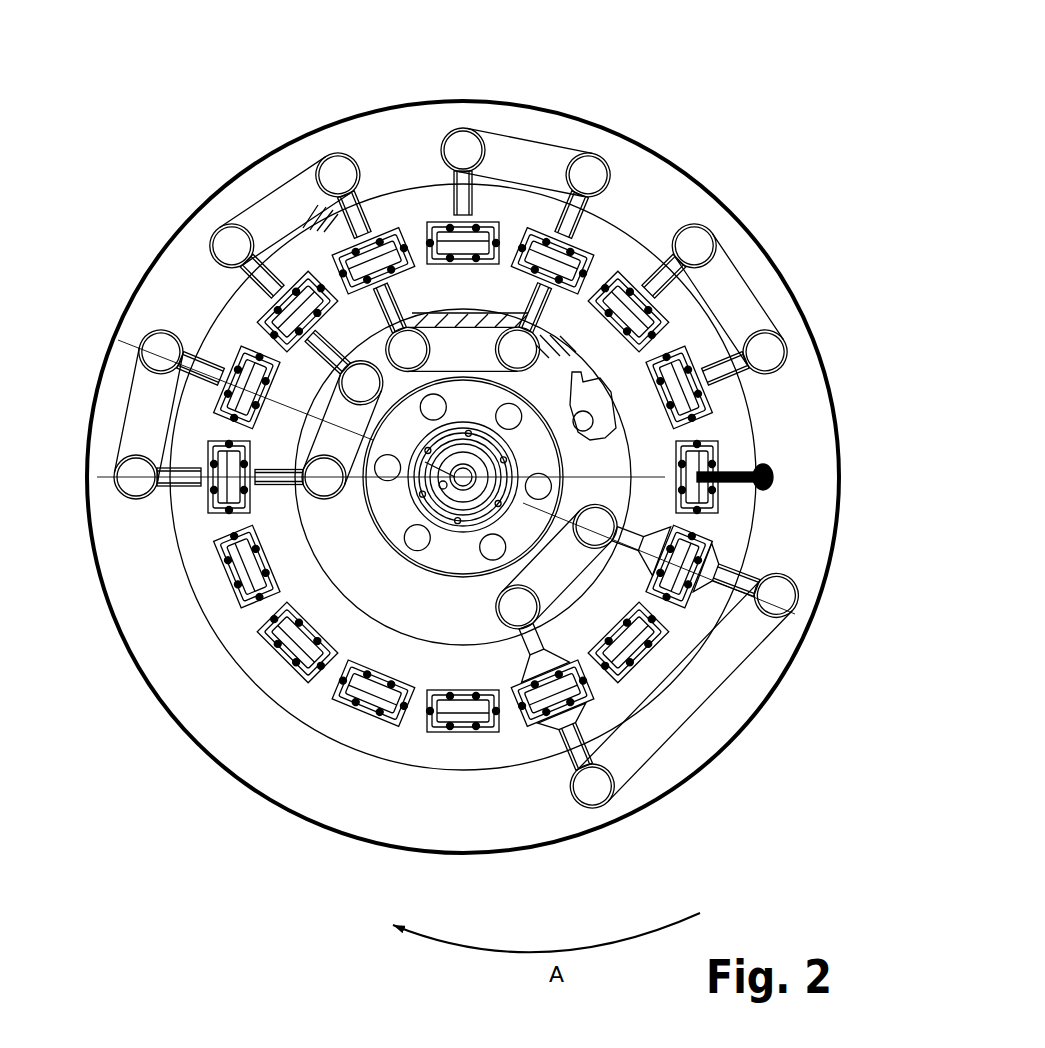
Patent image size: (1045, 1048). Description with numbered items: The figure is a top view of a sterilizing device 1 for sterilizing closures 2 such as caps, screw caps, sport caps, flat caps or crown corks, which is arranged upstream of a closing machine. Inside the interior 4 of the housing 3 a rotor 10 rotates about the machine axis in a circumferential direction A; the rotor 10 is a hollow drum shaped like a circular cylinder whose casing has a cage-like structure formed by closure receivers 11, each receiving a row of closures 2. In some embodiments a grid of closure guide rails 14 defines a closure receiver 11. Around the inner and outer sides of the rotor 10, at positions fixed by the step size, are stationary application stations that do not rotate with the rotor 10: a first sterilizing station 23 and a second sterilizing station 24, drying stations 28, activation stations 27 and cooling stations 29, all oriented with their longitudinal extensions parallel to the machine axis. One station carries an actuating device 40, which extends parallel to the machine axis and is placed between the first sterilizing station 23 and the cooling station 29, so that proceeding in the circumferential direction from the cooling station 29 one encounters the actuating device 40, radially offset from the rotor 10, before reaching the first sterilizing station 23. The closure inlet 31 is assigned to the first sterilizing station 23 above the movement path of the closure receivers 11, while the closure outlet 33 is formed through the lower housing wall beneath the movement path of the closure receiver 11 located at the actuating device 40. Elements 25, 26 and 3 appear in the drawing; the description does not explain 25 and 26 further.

The sterilizing device 1 is at (670, 107).
The closures 2 is at (683, 474).
The housing 3 is at (288, 822).
The interior 4 is at (340, 799).
The rotor 10 is at (654, 238).
The closure receivers 11 is at (720, 440).
The closure guide rails 14 is at (702, 511).
The first sterilizing station 23 is at (797, 621).
The second sterilizing station 24 is at (608, 802).
The brake pad 25 is at (667, 657).
The brake pads 26 is at (425, 743).
The activation stations 27 is at (438, 119).
The drying stations 28 is at (330, 386).
The cooling stations 29 is at (757, 277).
The closure inlet 31 is at (692, 614).
The closure outlet 33 is at (722, 457).
The actuating device 40 is at (782, 482).